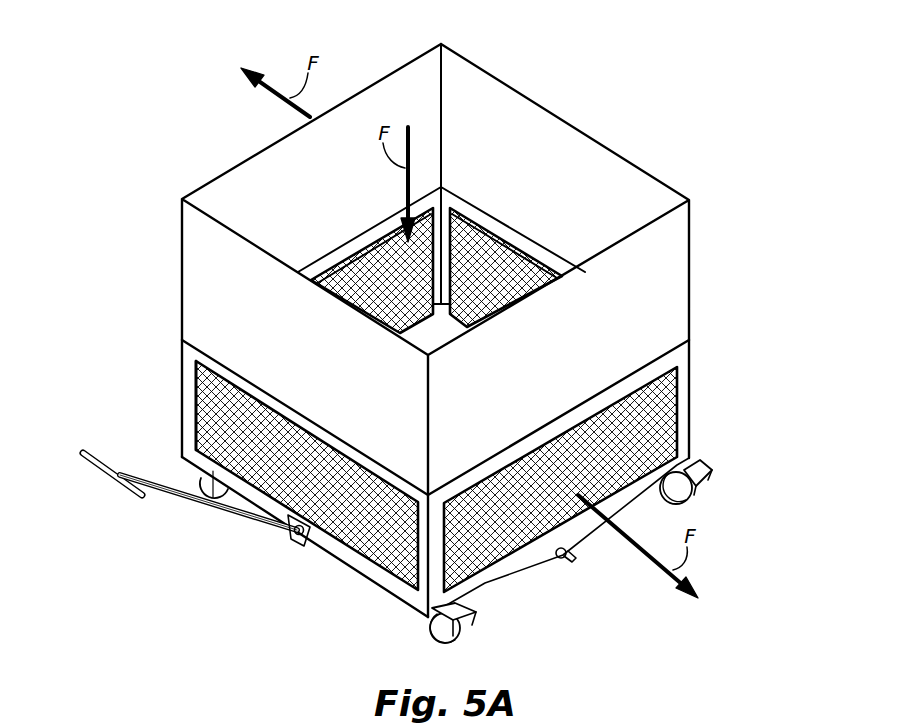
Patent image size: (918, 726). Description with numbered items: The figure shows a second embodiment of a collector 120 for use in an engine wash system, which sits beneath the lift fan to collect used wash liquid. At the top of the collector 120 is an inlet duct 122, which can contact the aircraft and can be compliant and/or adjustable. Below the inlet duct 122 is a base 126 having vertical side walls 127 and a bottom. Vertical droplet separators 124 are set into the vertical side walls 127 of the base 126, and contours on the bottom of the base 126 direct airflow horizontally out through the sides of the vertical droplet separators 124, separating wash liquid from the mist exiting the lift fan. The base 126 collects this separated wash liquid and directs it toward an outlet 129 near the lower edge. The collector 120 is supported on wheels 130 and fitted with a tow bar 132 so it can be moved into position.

The collector 120 is at (668, 138).
The inlet duct 122 is at (558, 138).
The vertical droplet separators 124 is at (381, 578).
The base 126 is at (706, 436).
The vertical side walls 127 is at (190, 415).
The outlet 129 is at (577, 562).
The wheels 130 is at (472, 640).
The tow bar 132 is at (188, 500).